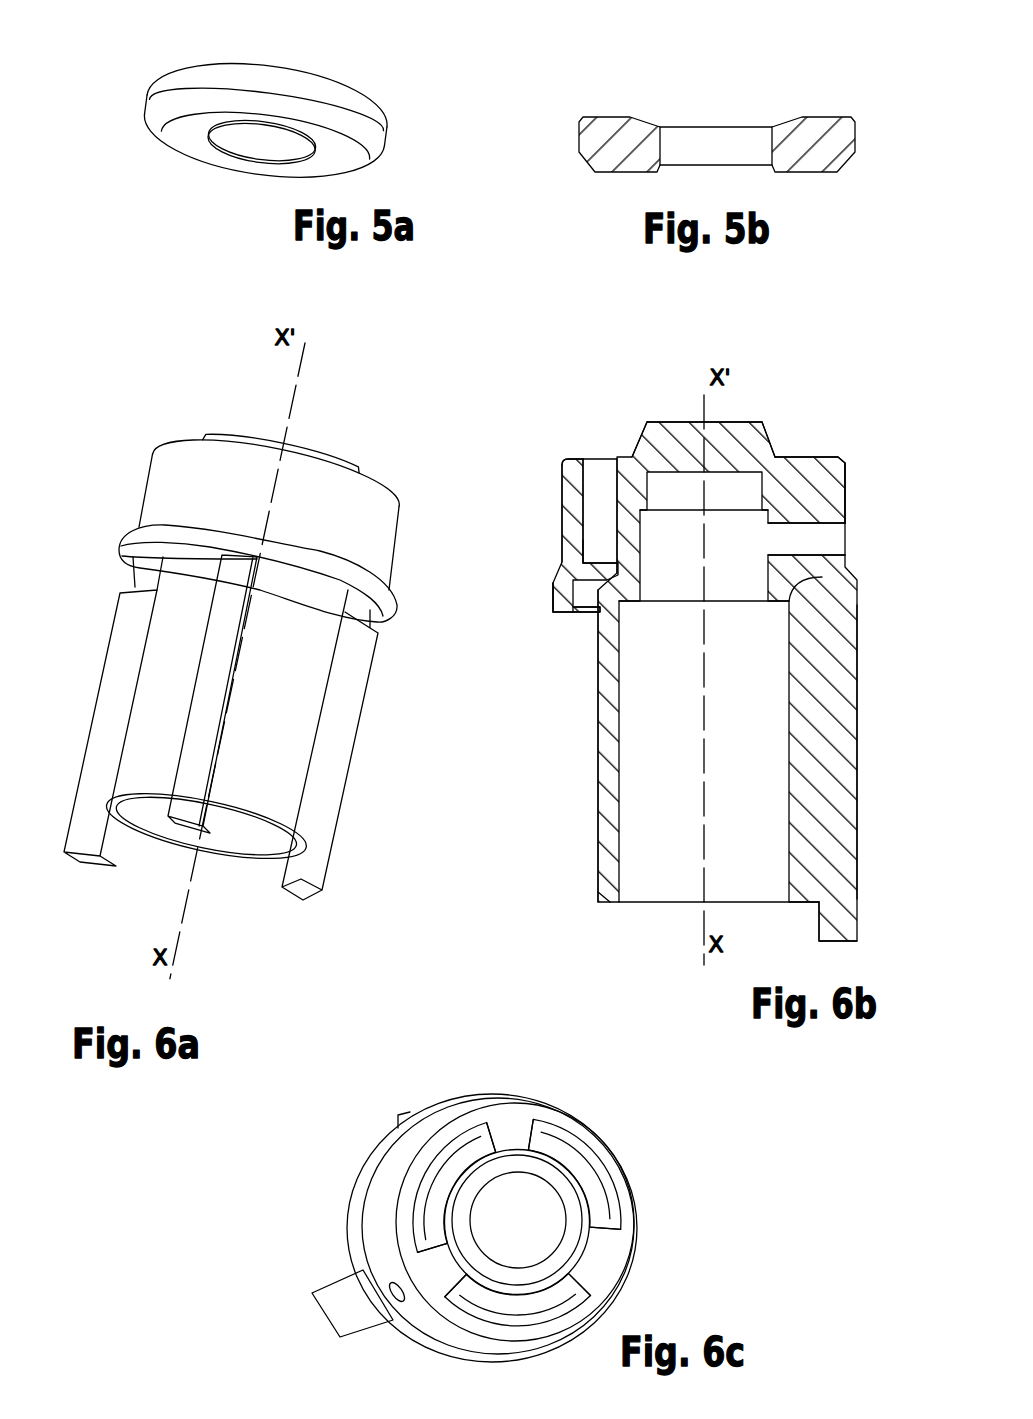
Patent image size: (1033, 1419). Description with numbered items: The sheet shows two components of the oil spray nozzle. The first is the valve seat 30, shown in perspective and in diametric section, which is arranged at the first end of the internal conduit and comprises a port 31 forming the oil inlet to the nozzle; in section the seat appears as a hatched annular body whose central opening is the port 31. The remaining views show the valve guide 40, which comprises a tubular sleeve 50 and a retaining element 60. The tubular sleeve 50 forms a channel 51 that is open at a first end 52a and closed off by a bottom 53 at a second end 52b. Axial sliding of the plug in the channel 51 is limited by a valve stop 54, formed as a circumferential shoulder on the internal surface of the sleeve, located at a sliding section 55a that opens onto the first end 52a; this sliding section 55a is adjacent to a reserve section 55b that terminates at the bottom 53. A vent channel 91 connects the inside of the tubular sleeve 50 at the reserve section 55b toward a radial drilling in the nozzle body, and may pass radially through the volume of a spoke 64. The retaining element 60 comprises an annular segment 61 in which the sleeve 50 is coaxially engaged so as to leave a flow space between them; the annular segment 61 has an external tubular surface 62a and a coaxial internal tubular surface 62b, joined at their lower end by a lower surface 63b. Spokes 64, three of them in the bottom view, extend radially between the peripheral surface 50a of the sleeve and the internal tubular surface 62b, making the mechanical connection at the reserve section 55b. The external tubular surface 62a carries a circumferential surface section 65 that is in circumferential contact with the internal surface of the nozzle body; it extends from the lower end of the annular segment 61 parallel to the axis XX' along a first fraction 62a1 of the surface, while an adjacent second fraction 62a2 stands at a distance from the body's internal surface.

In FIG. 5A, the valve seat 30 is at (180, 82).
In FIG. 5B, the valve seat 30 is at (597, 137).
In FIG. 5A, the port 31 is at (267, 137).
In FIG. 5B, the port 31 is at (713, 143).
In FIG. 6A, the valve guide 40 is at (192, 402).
In FIG. 6B, the valve guide 40 is at (506, 417).
In FIG. 6A, the tubular sleeve 50 is at (197, 612).
In FIG. 6B, the tubular sleeve 50 is at (600, 735).
In FIG. 6A, the peripheral surface 50a is at (160, 680).
In FIG. 6B, the peripheral surface 50a is at (597, 812).
In FIG. 6B, the channel 51 is at (668, 790).
In FIG. 6A, the first end 52a is at (113, 775).
In FIG. 6B, the first end 52a is at (611, 905).
In FIG. 6A, the second end 52b is at (318, 444).
In FIG. 6B, the second end 52b is at (745, 442).
In FIG. 6B, the bottom 53 is at (693, 447).
In FIG. 6B, the valve stop 54 is at (808, 581).
In FIG. 6B, the sliding section 55a is at (884, 605).
In FIG. 6B, the reserve section 55b is at (883, 473).
In FIG. 6A, the retaining element 60 is at (162, 498).
In FIG. 6B, the retaining element 60 is at (573, 493).
In FIG. 6B, the annular segment 61 is at (575, 553).
In FIG. 6C, the annular segment 61 is at (622, 1240).
In FIG. 6B, the external tubular surface 62a is at (603, 480).
In FIG. 6C, the external tubular surface 62a is at (383, 1203).
In FIG. 6B, the first fraction 62a1 is at (519, 567).
In FIG. 6B, the second fraction 62a2 is at (519, 460).
In FIG. 6C, the internal tubular surface 62b is at (525, 1198).
In FIG. 6B, the retaining lip 63b is at (583, 458).
In FIG. 6B, the spoke 64 is at (802, 490).
In FIG. 6C, the spoke 64 is at (538, 1211).
In FIG. 6A, the circumferential surface section 65 is at (397, 597).
In FIG. 6B, the circumferential surface section 65 is at (558, 598).
In FIG. 6B, the vent channel 91 is at (823, 540).